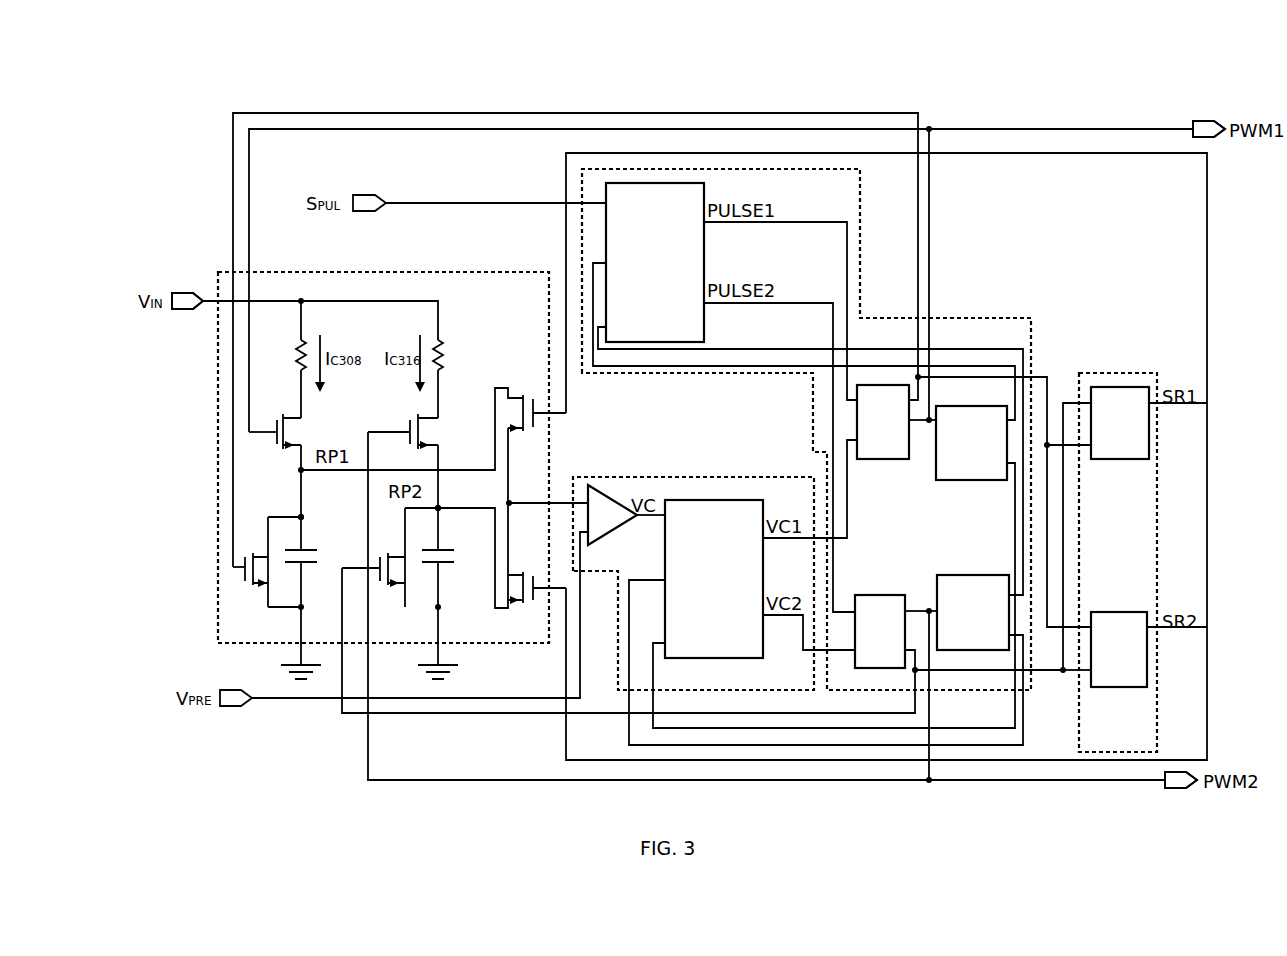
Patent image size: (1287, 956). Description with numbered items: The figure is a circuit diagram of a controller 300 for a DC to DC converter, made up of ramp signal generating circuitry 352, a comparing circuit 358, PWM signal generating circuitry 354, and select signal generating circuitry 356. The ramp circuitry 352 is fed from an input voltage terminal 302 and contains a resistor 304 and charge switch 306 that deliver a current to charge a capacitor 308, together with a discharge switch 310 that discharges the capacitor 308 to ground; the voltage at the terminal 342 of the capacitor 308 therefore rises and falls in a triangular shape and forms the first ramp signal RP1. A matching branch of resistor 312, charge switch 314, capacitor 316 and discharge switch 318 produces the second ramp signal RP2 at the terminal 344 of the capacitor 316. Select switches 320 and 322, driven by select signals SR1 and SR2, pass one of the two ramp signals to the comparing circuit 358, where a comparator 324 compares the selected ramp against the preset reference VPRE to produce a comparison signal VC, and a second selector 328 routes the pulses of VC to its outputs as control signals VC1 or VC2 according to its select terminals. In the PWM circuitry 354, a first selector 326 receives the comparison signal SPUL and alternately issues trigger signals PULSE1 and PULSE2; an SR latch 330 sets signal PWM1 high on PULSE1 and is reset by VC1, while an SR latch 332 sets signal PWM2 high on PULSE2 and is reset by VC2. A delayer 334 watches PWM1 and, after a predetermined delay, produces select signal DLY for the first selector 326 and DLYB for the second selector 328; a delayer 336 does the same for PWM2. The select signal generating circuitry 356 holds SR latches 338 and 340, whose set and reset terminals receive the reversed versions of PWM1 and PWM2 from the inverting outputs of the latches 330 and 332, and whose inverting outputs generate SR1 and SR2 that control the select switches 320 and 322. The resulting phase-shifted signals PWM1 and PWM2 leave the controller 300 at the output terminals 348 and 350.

The controller 300 is at (218, 94).
The input voltage terminal VIN 302 is at (195, 311).
The resistor 304 is at (296, 342).
The charge switch 306 is at (297, 445).
The capacitor 308 is at (310, 548).
The discharge switch 310 is at (253, 578).
The resistor 312 is at (440, 342).
The charge switch 314 is at (432, 445).
The capacitor 316 is at (447, 548).
The discharge switch 318 is at (393, 582).
The select switch 320 is at (526, 398).
The select switch 322 is at (514, 609).
The comparator 324 is at (604, 540).
The first selector 326 is at (704, 334).
The second selector 328 is at (740, 660).
The SR latch 330 is at (862, 460).
The SR latch 332 is at (862, 594).
The delayer 334 is at (957, 481).
The delayer 336 is at (946, 575).
The SR latch 338 is at (1097, 460).
The SR latch 340 is at (1098, 688).
The terminal 342 is at (300, 512).
The terminal 344 is at (438, 506).
The PWM1 output terminal 348 is at (1205, 121).
The PWM2 output terminal 350 is at (1178, 789).
The ramp signal generating circuitry 352 is at (414, 272).
The PWM signal generating circuitry 354 is at (958, 318).
The select signal generating circuitry 356 is at (1093, 373).
The comparing circuit 358 is at (700, 477).